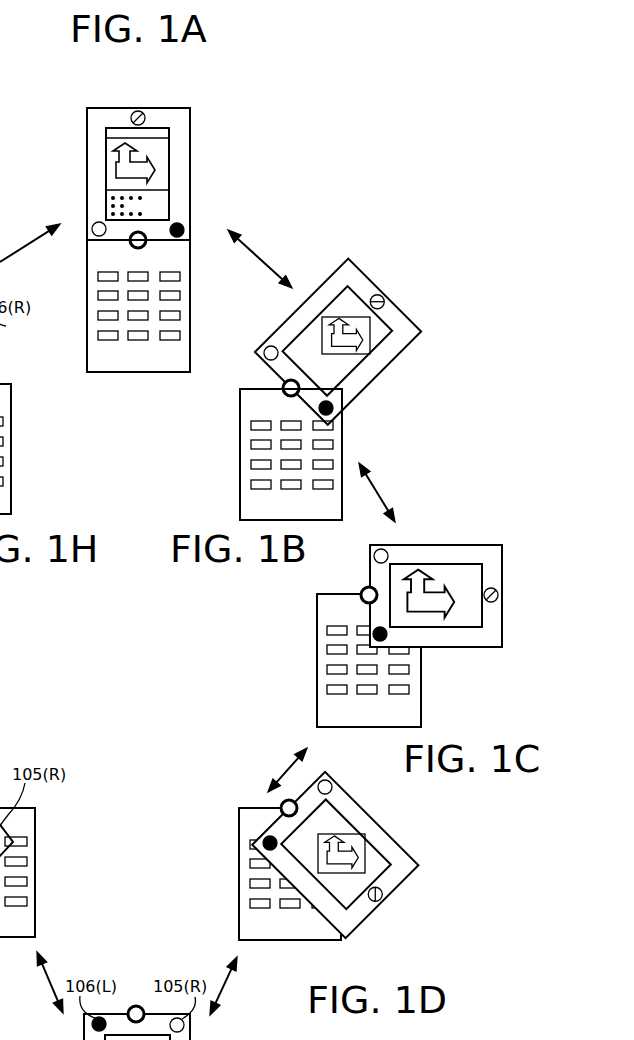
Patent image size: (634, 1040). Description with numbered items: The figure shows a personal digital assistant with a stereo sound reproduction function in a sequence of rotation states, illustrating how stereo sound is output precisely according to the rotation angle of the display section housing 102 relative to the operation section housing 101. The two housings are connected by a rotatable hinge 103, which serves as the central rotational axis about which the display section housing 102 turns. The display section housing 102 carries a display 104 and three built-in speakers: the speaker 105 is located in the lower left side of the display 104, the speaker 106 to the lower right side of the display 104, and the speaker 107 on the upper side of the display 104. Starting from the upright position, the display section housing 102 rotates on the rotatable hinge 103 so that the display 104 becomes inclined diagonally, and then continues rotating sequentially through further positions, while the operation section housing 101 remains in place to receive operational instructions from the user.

In FIG. 1A, the operation section housing 101 is at (190, 312).
In FIG. 1A, the display section housing 102 is at (87, 136).
In FIG. 1A, the rotatable hinge 103 is at (130, 246).
In FIG. 1A, the display 104 is at (169, 166).
In FIG. 1A, the speaker 105 is at (92, 224).
In FIG. 1B, the speaker 105 is at (265, 358).
In FIG. 1C, the speaker 105 is at (383, 550).
In FIG. 1A, the speaker 106 is at (181, 226).
In FIG. 1D, the speaker 106 is at (266, 838).
In FIG. 1A, the speaker 107 is at (141, 111).
In FIG. 1B, the speaker 107 is at (385, 299).
In FIG. 1C, the speaker 107 is at (497, 589).
In FIG. 1D, the speaker 107 is at (383, 891).